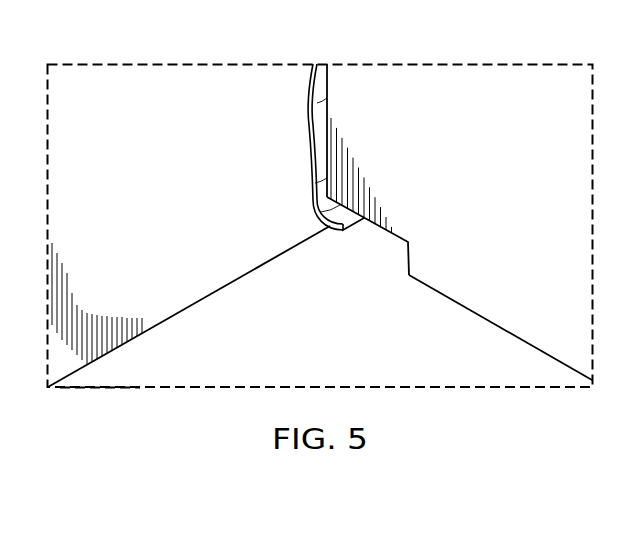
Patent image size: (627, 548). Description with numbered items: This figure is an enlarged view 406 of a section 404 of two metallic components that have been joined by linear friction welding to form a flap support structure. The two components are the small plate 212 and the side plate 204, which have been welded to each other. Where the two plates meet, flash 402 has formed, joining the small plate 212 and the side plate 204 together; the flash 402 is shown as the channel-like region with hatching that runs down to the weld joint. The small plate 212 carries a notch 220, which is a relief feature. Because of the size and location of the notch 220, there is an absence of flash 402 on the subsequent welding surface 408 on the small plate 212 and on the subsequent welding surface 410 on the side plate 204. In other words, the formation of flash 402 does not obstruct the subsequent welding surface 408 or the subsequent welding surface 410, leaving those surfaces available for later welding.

The side plate 204 is at (145, 178).
The small plate 212 is at (522, 332).
The notch 220 is at (382, 268).
The flash 402 is at (311, 139).
The section 404 is at (487, 64).
The enlarged view 406 is at (127, 388).
The subsequent welding surface 408 is at (450, 303).
The subsequent welding surface 410 is at (195, 307).